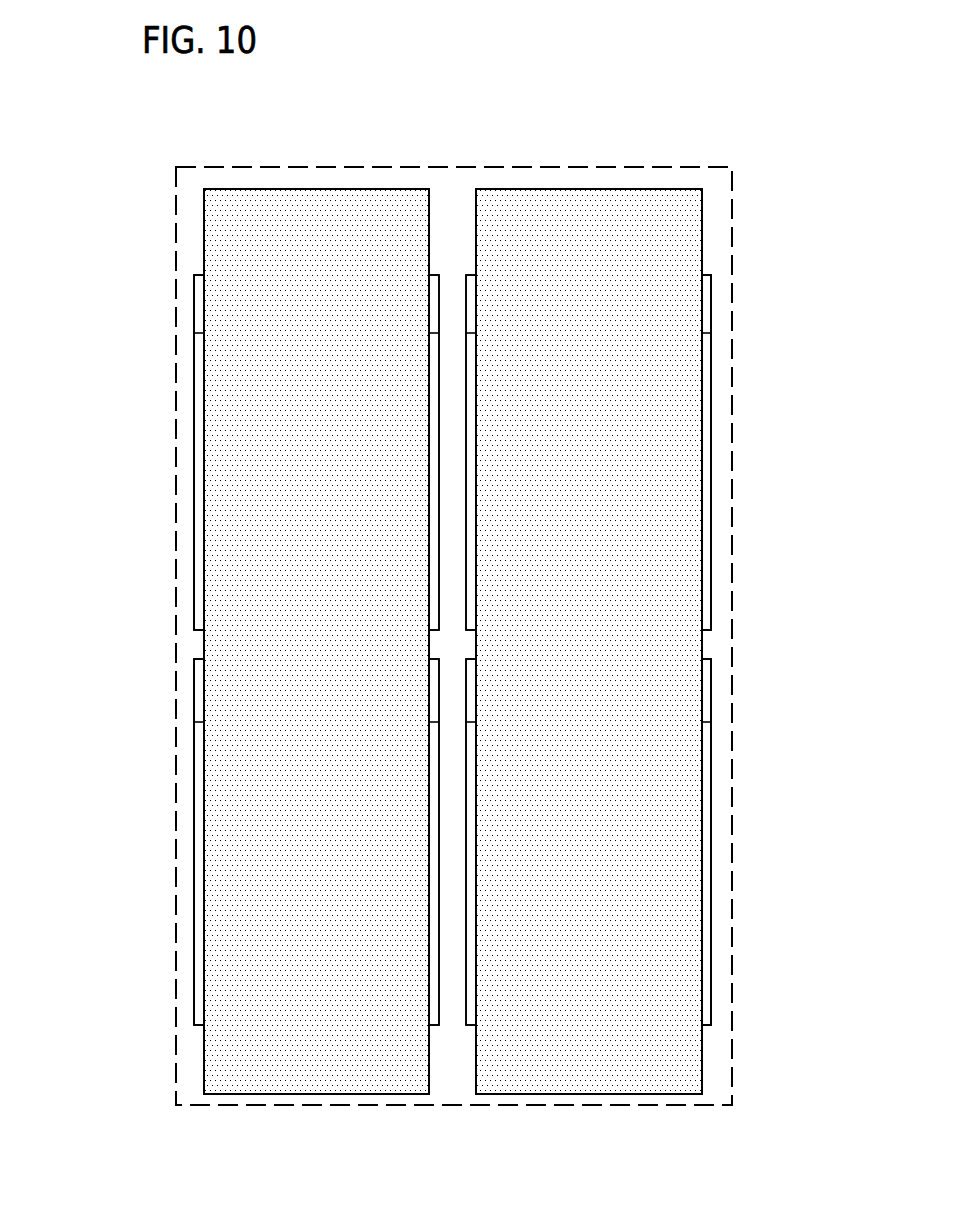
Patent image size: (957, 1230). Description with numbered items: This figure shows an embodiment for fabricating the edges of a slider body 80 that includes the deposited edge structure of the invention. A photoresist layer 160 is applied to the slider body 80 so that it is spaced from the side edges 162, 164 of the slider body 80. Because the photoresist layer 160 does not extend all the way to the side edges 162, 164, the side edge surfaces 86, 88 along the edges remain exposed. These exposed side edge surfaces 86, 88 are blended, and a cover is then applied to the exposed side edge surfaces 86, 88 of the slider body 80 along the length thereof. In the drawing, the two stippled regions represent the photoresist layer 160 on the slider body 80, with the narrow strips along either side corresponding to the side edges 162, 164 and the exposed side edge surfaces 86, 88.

The photoresist layer 160 is at (225, 265).
The side edge 162 is at (193, 353).
The side edge 164 is at (439, 318).
The slider body 80 is at (193, 448).
The exposed side edge surface 86 is at (194, 518).
The exposed side edge surface 88 is at (711, 487).